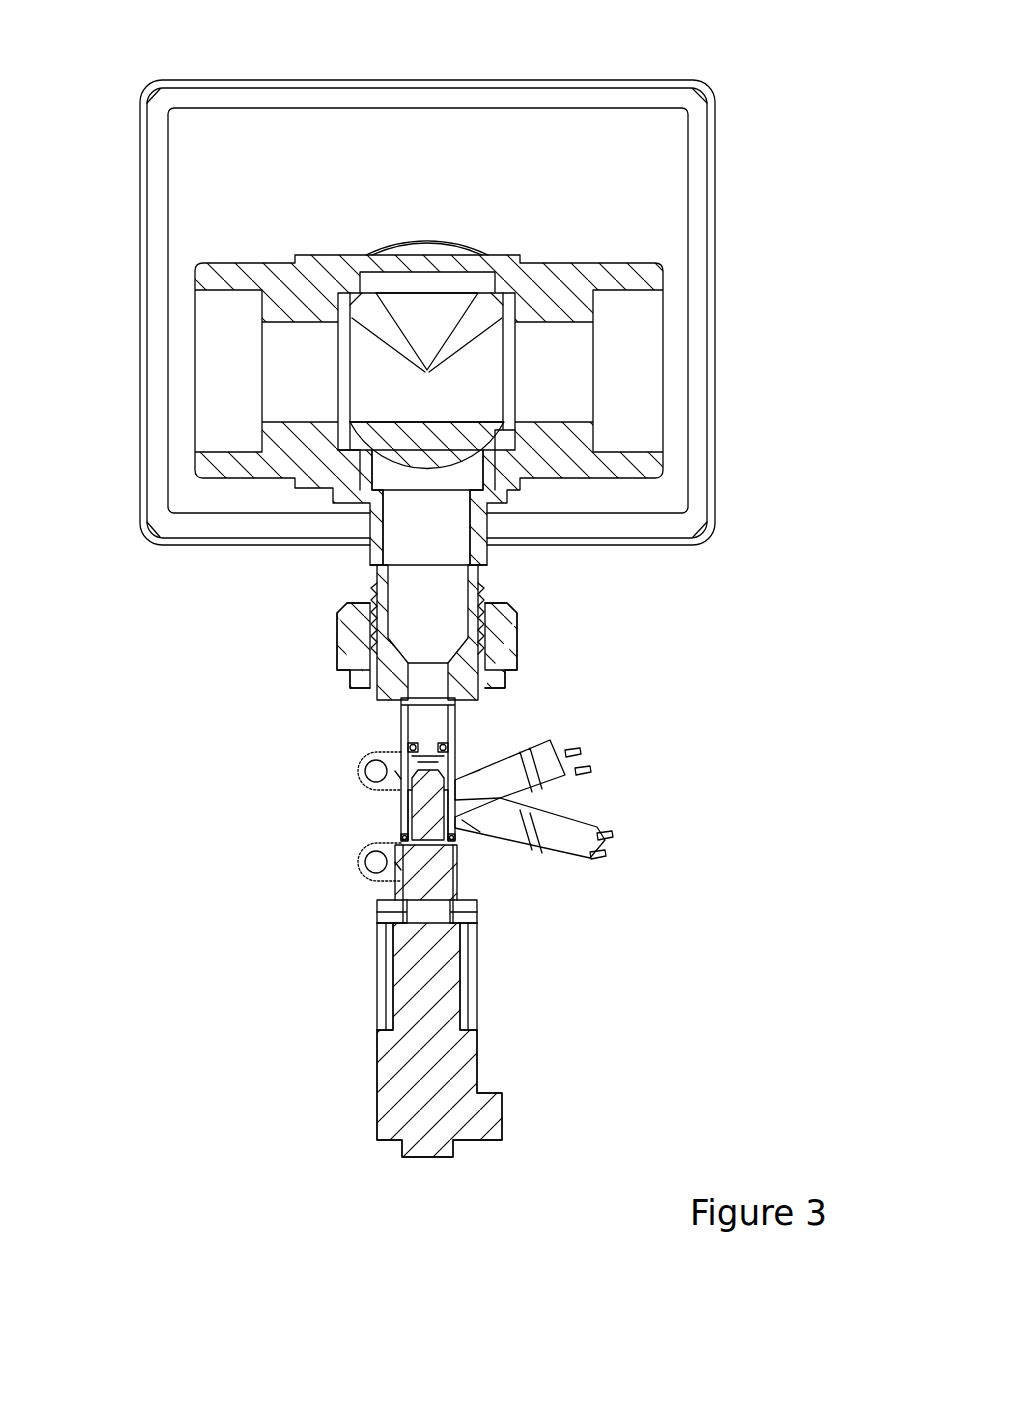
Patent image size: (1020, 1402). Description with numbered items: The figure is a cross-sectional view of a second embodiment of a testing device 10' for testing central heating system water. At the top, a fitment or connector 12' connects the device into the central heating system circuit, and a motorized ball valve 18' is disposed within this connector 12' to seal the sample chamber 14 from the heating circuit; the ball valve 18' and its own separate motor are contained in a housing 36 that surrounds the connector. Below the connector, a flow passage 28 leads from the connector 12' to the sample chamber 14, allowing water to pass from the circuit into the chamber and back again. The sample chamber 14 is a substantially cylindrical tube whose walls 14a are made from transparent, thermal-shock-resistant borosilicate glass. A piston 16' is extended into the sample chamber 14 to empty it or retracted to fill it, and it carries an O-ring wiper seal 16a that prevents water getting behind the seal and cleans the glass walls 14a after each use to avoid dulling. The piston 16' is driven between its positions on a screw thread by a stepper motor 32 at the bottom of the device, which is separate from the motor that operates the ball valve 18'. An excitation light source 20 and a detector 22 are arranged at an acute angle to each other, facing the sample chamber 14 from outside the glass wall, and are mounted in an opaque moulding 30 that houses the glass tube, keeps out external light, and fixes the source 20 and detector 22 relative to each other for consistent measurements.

The testing device 10' is at (428, 595).
The connector 12' is at (354, 354).
The sample chamber 14 is at (432, 716).
The walls 14a is at (402, 815).
The piston 16' is at (501, 731).
The O-ring wiper seal 16a is at (405, 746).
The motorized ball valve 18' is at (398, 227).
The excitation light source 20 is at (587, 832).
The detector 22 is at (554, 758).
The flow passage 28 is at (440, 652).
The opaque moulding 30 is at (458, 863).
The stepper motor 32 is at (416, 1093).
The housing 36 is at (635, 220).